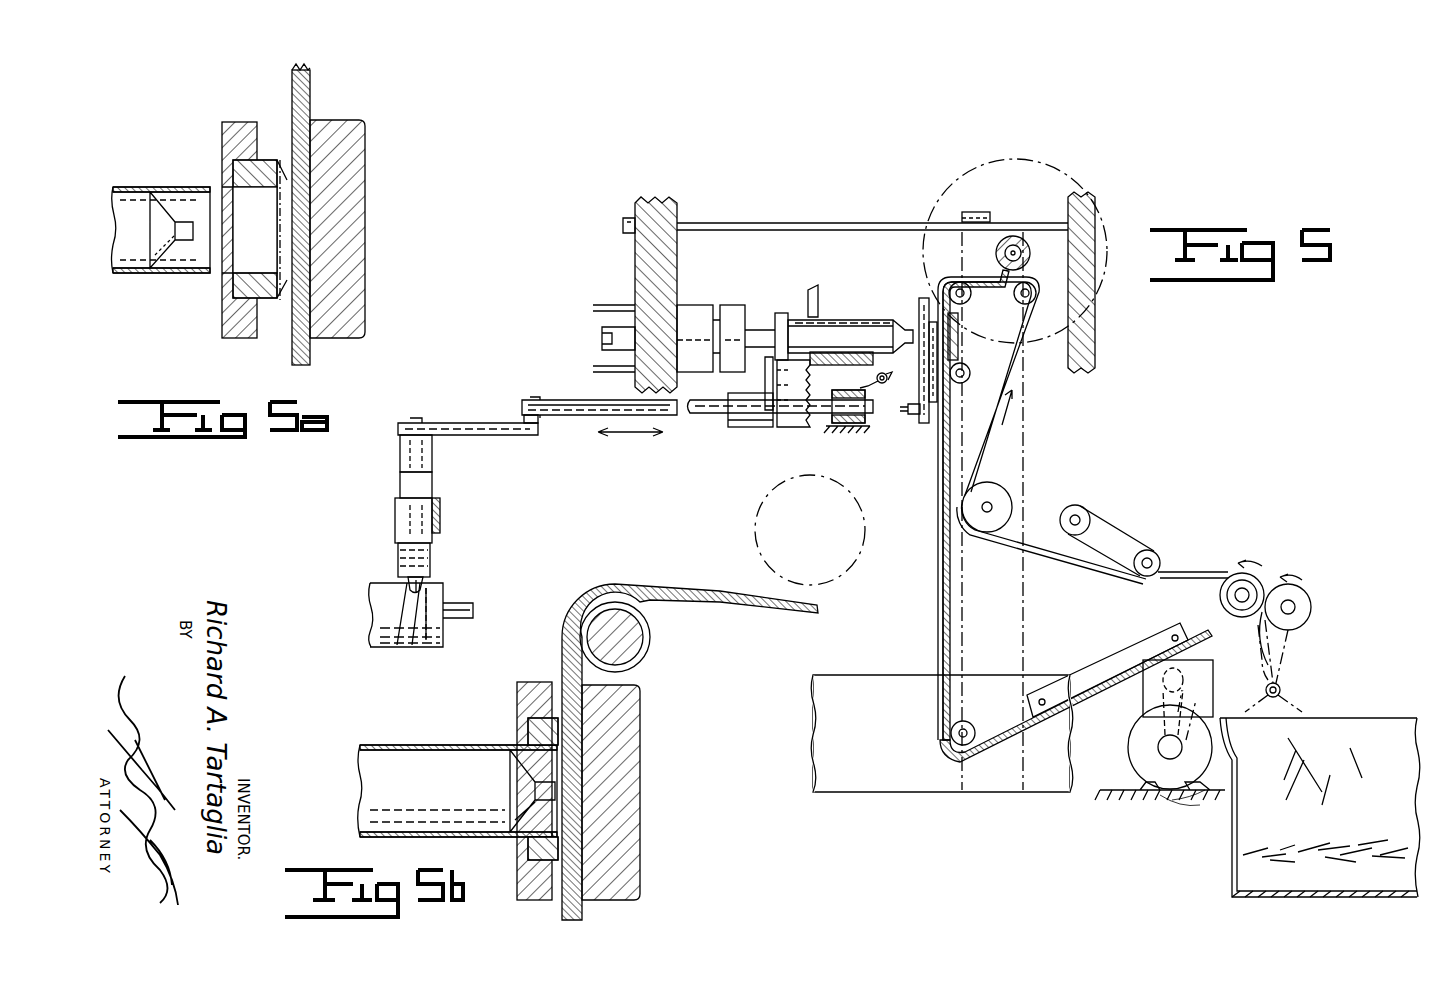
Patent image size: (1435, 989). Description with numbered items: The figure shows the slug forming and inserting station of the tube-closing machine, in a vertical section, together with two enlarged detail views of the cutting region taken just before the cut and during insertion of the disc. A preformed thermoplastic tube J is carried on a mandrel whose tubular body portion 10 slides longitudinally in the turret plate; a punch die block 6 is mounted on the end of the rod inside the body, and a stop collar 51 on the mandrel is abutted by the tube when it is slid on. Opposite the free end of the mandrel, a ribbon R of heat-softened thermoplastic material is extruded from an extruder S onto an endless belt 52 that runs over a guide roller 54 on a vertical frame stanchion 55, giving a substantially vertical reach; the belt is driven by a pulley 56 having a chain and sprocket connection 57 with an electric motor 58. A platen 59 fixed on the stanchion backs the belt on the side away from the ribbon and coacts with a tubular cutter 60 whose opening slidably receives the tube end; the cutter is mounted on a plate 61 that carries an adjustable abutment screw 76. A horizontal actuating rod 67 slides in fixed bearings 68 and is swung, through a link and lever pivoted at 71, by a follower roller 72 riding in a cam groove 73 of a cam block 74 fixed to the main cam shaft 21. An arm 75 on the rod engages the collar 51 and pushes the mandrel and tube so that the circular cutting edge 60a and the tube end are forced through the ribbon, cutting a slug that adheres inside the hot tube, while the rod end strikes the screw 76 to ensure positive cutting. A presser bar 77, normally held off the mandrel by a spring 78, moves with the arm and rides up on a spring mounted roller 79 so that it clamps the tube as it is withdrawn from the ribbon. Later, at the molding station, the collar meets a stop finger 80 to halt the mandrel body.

In FIG. 5a, the punch die block 6 is at (178, 215).
In FIG. 5b, the tubular body portion 10 is at (384, 765).
In FIG. 5, the main cam shaft 21 is at (470, 606).
In FIG. 5, the stop collar 51 is at (783, 318).
In FIG. 5a, the endless belt 52 is at (310, 355).
In FIG. 5, the endless belt 52 is at (990, 440).
In FIG. 5, the guide roller 54 is at (1010, 508).
In FIG. 5, the vertical frame stanchion 55 is at (1030, 605).
In FIG. 5, the pulley 56 is at (1235, 580).
In FIG. 5, the chain and sprocket connection 57 is at (1285, 662).
In FIG. 5, the electric motor 58 is at (1165, 790).
In FIG. 5a, the platen 59 is at (350, 238).
In FIG. 5b, the platen 59 is at (640, 786).
In FIG. 5, the platen 59 is at (958, 333).
In FIG. 5a, the tubular cutter 60 is at (258, 192).
In FIG. 5b, the tubular cutter 60 is at (560, 735).
In FIG. 5, the tubular cutter 60 is at (918, 310).
In FIG. 5a, the circular cutting edge 60a is at (283, 275).
In FIG. 5b, the circular cutting edge 60a is at (575, 838).
In FIG. 5a, the plate 61 is at (238, 338).
In FIG. 5b, the plate 61 is at (520, 693).
In FIG. 5, the plate 61 is at (924, 300).
In FIG. 5, the horizontal actuating rod 67 is at (560, 400).
In FIG. 5, the fixed bearings 68 is at (850, 430).
In FIG. 5, the lever pivot 71 is at (400, 520).
In FIG. 5, the follower roller 72 is at (428, 595).
In FIG. 5, the cam groove 73 is at (410, 645).
In FIG. 5, the cam block 74 is at (385, 590).
In FIG. 5, the arm 75 is at (745, 430).
In FIG. 5, the adjustable abutment screw 76 is at (910, 416).
In FIG. 5, the presser bar 77 is at (812, 415).
In FIG. 5, the spring 78 is at (790, 425).
In FIG. 5, the spring mounted roller 79 is at (882, 389).
In FIG. 5, the stop finger 80 is at (838, 270).
In FIG. 5a, the ribbon R is at (281, 113).
In FIG. 5b, the ribbon R is at (552, 652).
In FIG. 5, the ribbon R is at (950, 260).
In FIG. 5b, the extruder S is at (640, 745).
In FIG. 5, the extruder S is at (1029, 158).
In FIG. 5a, the preformed thermoplastic tube J is at (190, 275).
In FIG. 5b, the preformed thermoplastic tube J is at (436, 745).